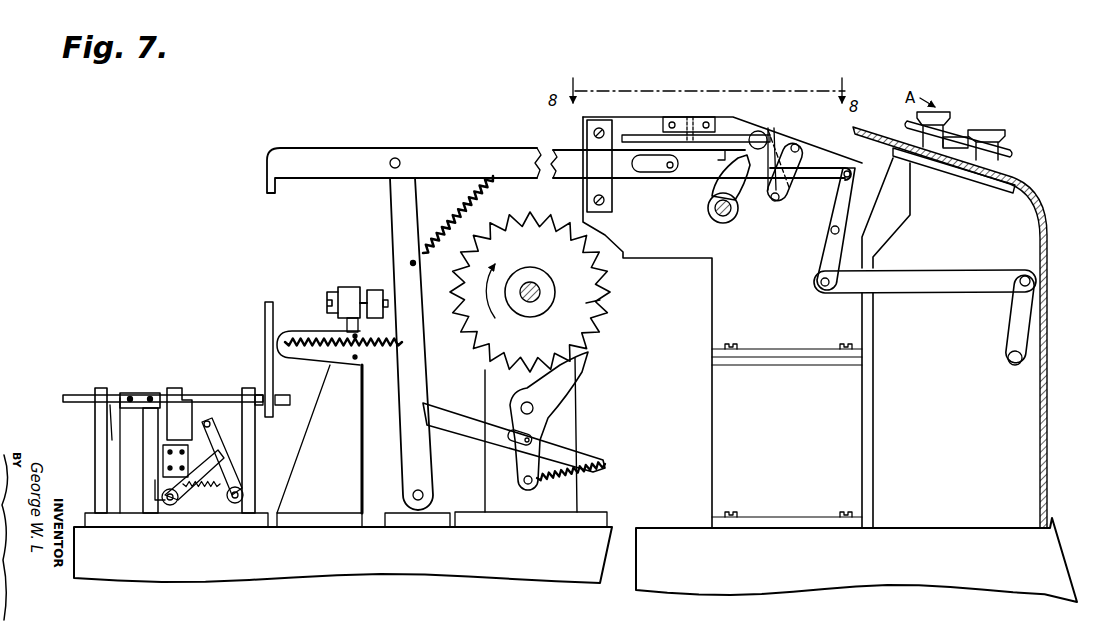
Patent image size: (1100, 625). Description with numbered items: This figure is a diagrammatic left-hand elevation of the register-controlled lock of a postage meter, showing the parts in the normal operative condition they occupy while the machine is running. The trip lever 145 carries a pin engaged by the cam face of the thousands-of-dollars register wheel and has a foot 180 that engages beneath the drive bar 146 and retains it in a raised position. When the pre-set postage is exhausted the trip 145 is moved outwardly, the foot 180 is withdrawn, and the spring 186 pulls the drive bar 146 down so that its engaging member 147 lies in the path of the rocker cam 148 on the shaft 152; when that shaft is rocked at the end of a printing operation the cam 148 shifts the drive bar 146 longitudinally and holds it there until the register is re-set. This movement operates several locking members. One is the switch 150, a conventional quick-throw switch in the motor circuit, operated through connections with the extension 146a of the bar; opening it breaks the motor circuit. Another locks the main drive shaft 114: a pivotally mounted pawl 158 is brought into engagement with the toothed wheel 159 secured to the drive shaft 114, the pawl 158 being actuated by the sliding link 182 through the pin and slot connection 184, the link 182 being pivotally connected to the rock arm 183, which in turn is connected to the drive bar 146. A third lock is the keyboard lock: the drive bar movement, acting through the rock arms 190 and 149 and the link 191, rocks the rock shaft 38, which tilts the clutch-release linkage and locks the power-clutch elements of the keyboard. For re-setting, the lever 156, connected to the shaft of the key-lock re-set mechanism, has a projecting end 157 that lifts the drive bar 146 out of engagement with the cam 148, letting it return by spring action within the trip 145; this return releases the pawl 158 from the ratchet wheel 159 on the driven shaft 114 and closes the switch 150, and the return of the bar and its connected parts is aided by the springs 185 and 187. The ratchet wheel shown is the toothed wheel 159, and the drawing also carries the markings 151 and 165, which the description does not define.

The drive shaft 114 is at (528, 283).
The trip lever 145 is at (757, 132).
The drive bar 146 is at (672, 178).
The extension of bar 146a is at (266, 335).
The engaging member 147 is at (722, 160).
The rocker cam 148 is at (736, 194).
The rock arm 149 is at (1014, 332).
The switch 150 is at (183, 384).
The ratchet wheel 151 is at (597, 343).
The shaft 152 is at (729, 220).
The lever 156 is at (798, 160).
The projecting end 157 is at (782, 198).
The pawl 158 is at (578, 386).
The toothed wheel 159 is at (600, 300).
The pin 165 is at (795, 144).
The foot 180 is at (790, 184).
The sliding link 182 is at (470, 428).
The rock arm 183 is at (392, 237).
The pin and slot connection 184 is at (512, 448).
The spring 185 is at (588, 474).
The spring 186 is at (449, 218).
The spring 187 is at (388, 346).
The rock arm 190 is at (822, 267).
The link 191 is at (936, 280).
The rock shaft 38 is at (1012, 366).